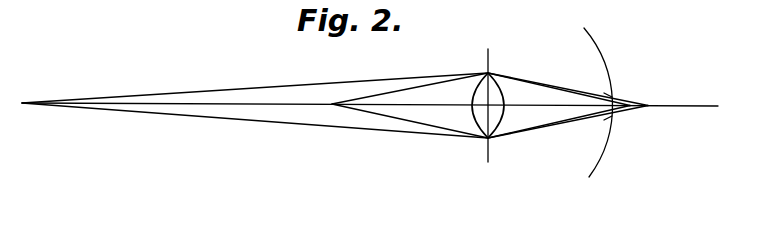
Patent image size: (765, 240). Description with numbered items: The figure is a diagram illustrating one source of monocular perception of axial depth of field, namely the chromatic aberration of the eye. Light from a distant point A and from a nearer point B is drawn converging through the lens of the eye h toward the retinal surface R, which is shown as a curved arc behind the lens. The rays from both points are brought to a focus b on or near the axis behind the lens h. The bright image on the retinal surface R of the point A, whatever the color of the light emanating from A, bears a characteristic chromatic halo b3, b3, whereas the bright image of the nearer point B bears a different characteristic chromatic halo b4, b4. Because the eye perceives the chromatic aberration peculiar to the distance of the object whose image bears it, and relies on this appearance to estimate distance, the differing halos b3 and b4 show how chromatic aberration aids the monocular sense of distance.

The point A is at (244, 100).
The nearer point B is at (332, 104).
The lens h is at (500, 80).
The focal point of rays b is at (640, 103).
The chromatic halo b3 is at (578, 140).
The chromatic halo b4 is at (610, 95).
The retinal surface R is at (586, 176).